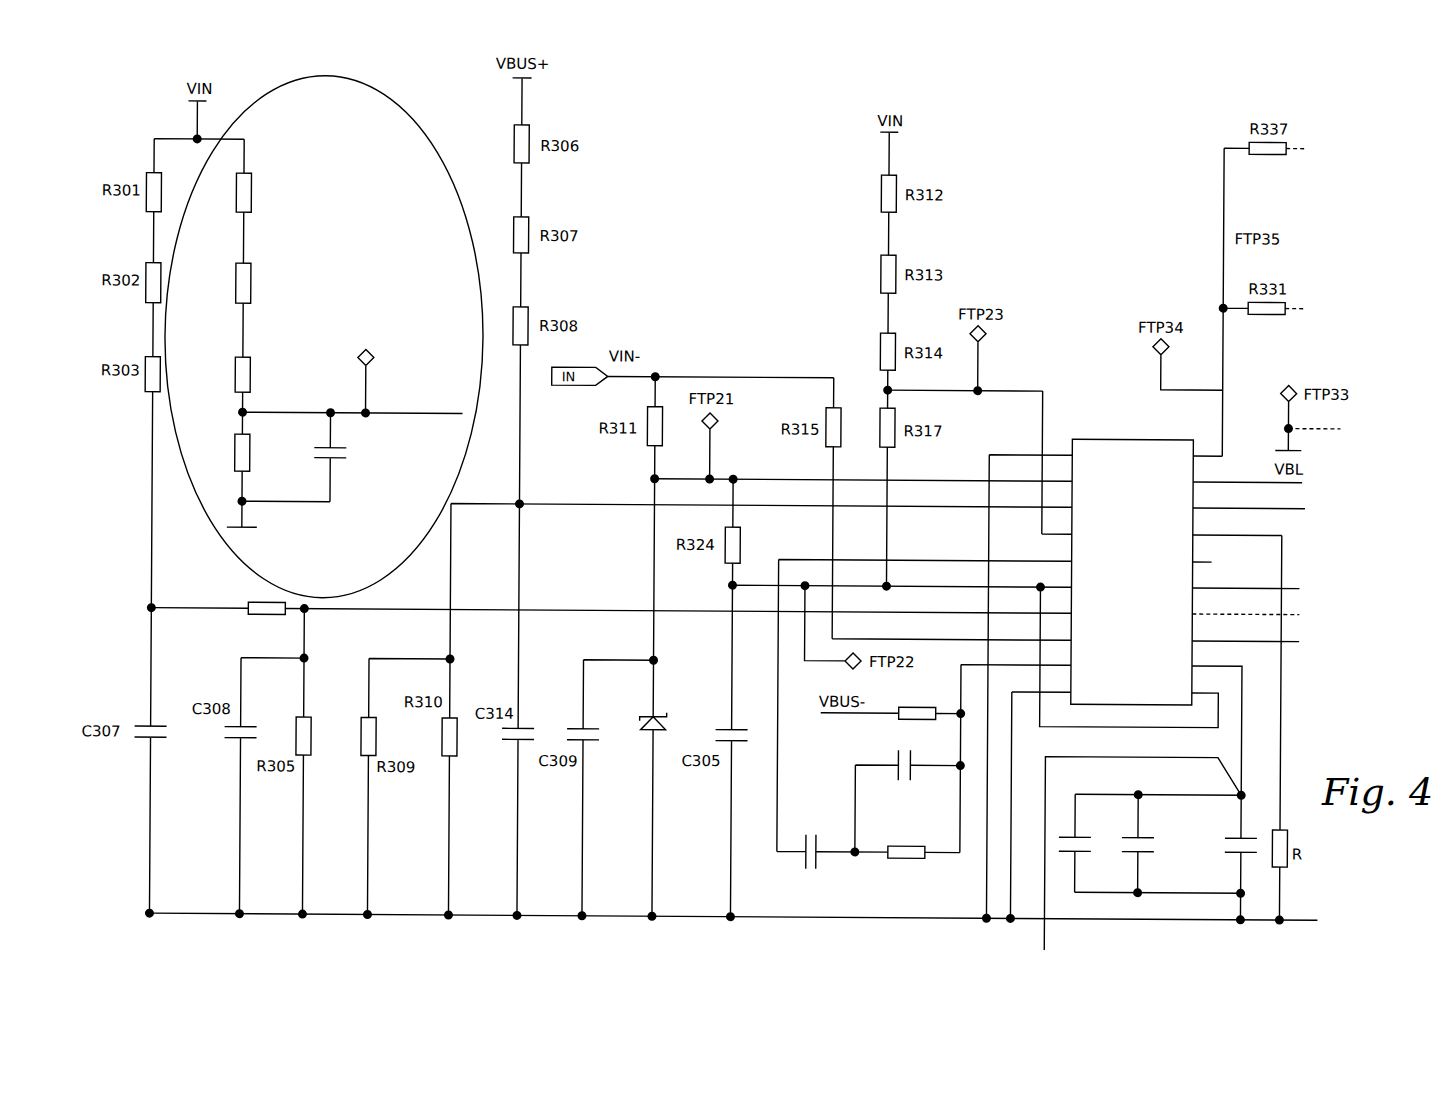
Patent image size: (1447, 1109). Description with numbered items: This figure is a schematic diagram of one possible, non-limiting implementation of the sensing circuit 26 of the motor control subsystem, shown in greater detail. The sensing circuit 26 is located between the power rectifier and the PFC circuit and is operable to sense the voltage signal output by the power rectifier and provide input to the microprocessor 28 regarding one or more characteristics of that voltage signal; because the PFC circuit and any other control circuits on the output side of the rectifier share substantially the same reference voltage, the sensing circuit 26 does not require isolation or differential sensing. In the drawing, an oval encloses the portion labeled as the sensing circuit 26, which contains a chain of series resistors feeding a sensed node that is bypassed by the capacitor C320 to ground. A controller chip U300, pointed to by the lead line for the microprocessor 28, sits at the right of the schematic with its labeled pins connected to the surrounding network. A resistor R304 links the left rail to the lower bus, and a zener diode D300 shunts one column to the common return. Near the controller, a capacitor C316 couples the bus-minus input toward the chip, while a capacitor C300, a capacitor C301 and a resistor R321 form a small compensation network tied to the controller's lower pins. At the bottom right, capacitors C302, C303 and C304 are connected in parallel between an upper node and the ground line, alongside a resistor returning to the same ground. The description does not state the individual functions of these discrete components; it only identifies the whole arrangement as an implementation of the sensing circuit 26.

The sensing circuit 26 is at (323, 335).
The microprocessor 28 is at (1132, 522).
The controller IC U300 is at (1132, 557).
The zener diode D300 is at (670, 709).
The capacitor C320 is at (354, 457).
The resistor R304 is at (266, 620).
The capacitor C300 is at (812, 866).
The capacitor C301 is at (905, 780).
The resistor R321 is at (905, 842).
The capacitor C316 is at (918, 702).
The capacitor C302 is at (1089, 834).
The capacitor C303 is at (1153, 858).
The capacitor C304 is at (1225, 835).